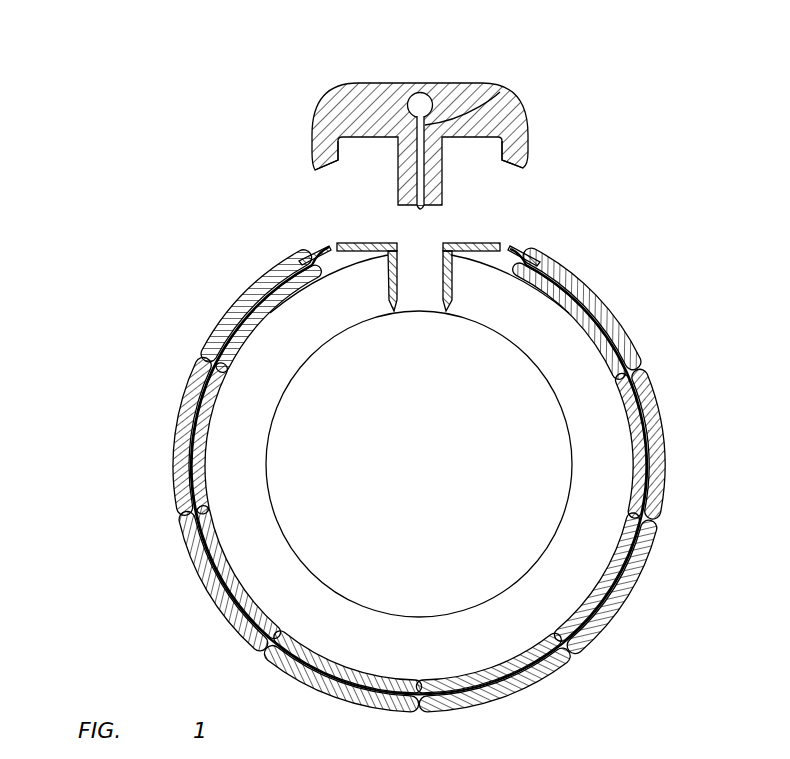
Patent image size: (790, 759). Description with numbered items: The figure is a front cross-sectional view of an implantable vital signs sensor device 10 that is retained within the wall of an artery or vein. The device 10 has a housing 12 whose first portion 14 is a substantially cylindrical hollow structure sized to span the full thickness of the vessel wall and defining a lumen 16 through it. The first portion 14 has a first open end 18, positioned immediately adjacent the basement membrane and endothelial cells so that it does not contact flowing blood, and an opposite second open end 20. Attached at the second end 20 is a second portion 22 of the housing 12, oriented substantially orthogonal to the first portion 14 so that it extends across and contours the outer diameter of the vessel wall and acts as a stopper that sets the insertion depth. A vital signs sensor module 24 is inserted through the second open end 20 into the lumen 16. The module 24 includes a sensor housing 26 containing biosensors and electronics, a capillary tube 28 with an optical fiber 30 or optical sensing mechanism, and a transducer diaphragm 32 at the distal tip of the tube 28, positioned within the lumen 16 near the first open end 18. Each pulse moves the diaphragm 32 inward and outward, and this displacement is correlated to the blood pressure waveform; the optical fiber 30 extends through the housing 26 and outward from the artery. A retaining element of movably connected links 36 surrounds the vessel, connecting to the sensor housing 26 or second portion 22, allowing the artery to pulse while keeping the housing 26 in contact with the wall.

The implantable vital signs sensor device 10 is at (573, 242).
The housing 12 is at (488, 243).
The first portion 14 is at (452, 268).
The lumen 16 is at (404, 295).
The first open end 18 is at (423, 292).
The second open end 20 is at (458, 243).
The second portion 22 is at (346, 243).
The vital signs sensor module 24 is at (464, 82).
The sensor housing 26 is at (353, 82).
The capillary tube 28 is at (433, 82).
The optical fiber 30 is at (500, 92).
The transducer diaphragm 32 is at (424, 215).
The links 36 is at (176, 478).